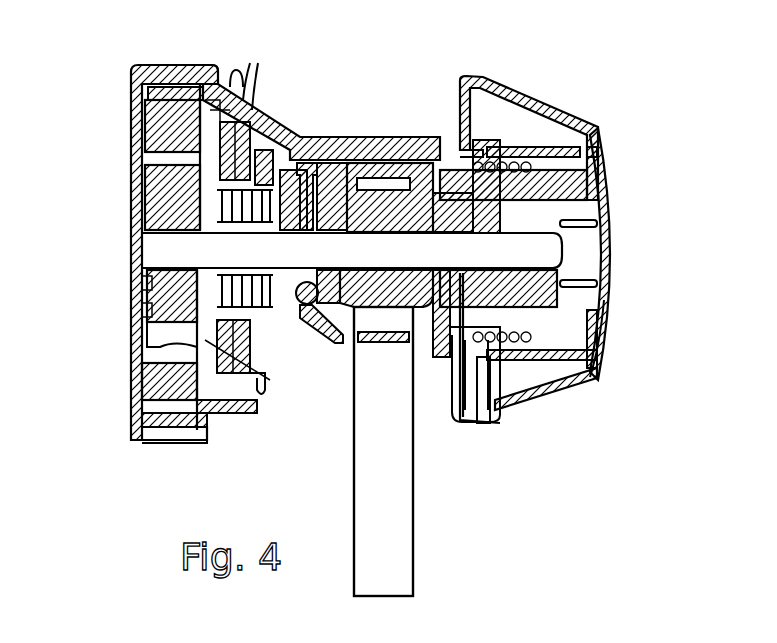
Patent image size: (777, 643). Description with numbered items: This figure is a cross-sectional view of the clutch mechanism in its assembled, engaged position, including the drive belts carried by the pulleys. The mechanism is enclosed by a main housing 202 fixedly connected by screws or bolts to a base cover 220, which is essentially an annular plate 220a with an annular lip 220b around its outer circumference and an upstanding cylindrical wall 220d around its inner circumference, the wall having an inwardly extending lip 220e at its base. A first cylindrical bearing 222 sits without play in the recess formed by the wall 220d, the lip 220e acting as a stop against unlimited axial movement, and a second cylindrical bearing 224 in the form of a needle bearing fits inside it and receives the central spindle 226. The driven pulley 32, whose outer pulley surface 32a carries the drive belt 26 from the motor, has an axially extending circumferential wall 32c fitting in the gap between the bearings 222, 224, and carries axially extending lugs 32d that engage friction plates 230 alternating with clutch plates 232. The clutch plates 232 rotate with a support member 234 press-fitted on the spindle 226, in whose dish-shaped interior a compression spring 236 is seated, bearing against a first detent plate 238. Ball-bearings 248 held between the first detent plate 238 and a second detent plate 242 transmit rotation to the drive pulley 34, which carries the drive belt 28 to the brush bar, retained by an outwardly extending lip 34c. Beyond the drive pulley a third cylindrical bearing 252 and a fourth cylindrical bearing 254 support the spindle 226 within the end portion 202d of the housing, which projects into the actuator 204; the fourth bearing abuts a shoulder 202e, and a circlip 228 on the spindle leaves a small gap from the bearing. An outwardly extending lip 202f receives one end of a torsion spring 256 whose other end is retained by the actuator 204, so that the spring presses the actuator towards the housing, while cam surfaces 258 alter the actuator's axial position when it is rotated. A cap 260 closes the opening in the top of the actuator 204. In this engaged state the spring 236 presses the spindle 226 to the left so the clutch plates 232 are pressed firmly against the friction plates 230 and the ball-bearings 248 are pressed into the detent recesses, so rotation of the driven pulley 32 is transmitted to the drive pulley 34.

The main housing 202 is at (168, 58).
The drive belt 26 is at (213, 68).
The driven pulley 32 is at (133, 103).
The clutch plate 232 is at (246, 107).
The support member 234 is at (272, 123).
The first detent plate 238 is at (300, 150).
The second detent plate 242 is at (357, 135).
The drive belt 28 is at (397, 528).
The drive pulley 34 is at (420, 137).
The actuator 204 is at (531, 77).
The torsion spring 256 is at (530, 177).
The end portion 202d is at (596, 150).
The shoulder 202e is at (606, 214).
The circlip 228 is at (560, 238).
The cap 260 is at (617, 307).
The fourth cylindrical bearing 254 is at (555, 325).
The cam surfaces 258 is at (507, 330).
The outwardly extending lip 202f is at (490, 395).
The third cylindrical bearing 252 is at (423, 322).
The outwardly extending lip 34c is at (414, 345).
The ball-bearings 248 is at (306, 336).
The axially extending lugs 32d is at (222, 340).
The friction plate 230 is at (222, 382).
The outer pulley surface 32a is at (210, 423).
The compression spring 236 is at (256, 237).
The spindle 226 is at (398, 269).
The base cover 220 is at (127, 150).
The axially extending circumferential wall 32c is at (140, 200).
The second cylindrical bearing 224 is at (133, 265).
The first cylindrical bearing 222 is at (134, 283).
The inwardly extending lip 220e is at (134, 310).
The upstanding cylindrical wall 220d is at (134, 350).
The annular plate 220a is at (134, 393).
The annular lip 220b is at (137, 444).